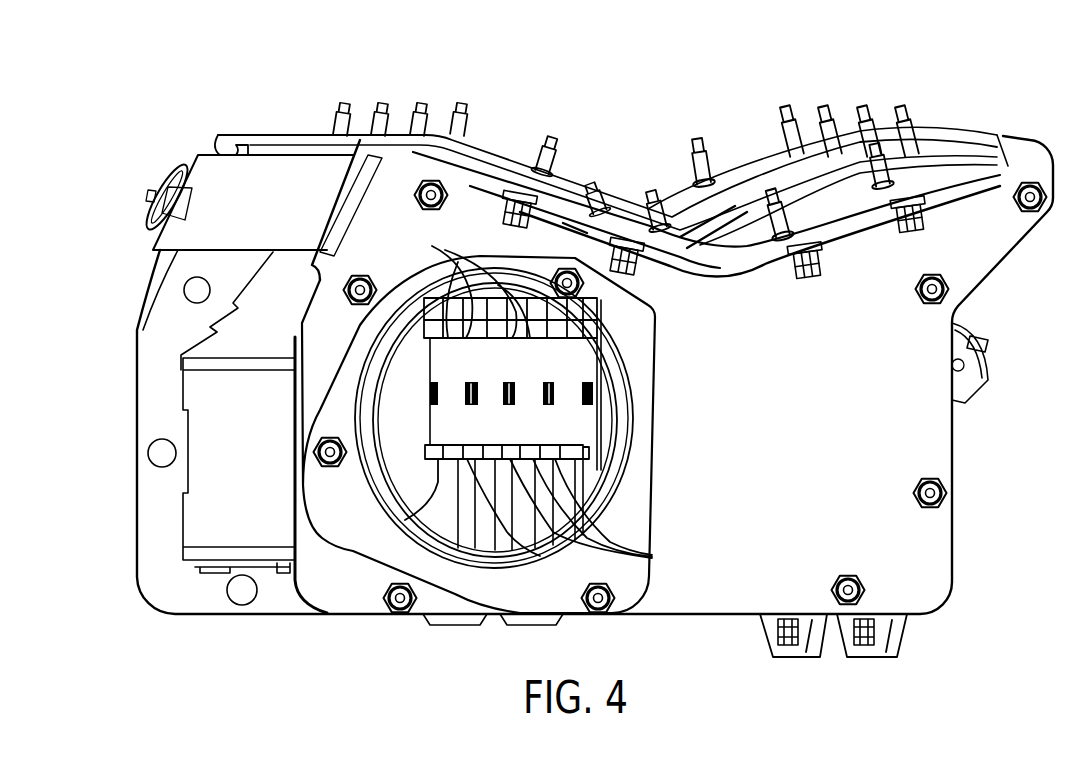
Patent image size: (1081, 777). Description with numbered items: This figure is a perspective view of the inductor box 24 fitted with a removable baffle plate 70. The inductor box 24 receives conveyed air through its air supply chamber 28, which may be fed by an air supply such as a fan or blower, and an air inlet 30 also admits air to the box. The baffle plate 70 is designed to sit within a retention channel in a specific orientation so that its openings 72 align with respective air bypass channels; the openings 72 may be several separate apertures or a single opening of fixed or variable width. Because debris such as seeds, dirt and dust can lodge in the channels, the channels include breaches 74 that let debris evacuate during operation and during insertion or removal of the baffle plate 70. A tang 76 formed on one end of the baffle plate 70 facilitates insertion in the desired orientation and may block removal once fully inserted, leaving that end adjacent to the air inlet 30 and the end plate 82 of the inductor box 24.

The inductor box 24 is at (933, 605).
The air supply chamber 28 is at (543, 152).
The air inlet 30 is at (365, 560).
The baffle plate 70 is at (580, 414).
The openings 72 is at (512, 405).
The breaches 74 is at (436, 247).
The tang 76 is at (593, 473).
The end plate 82 is at (784, 478).